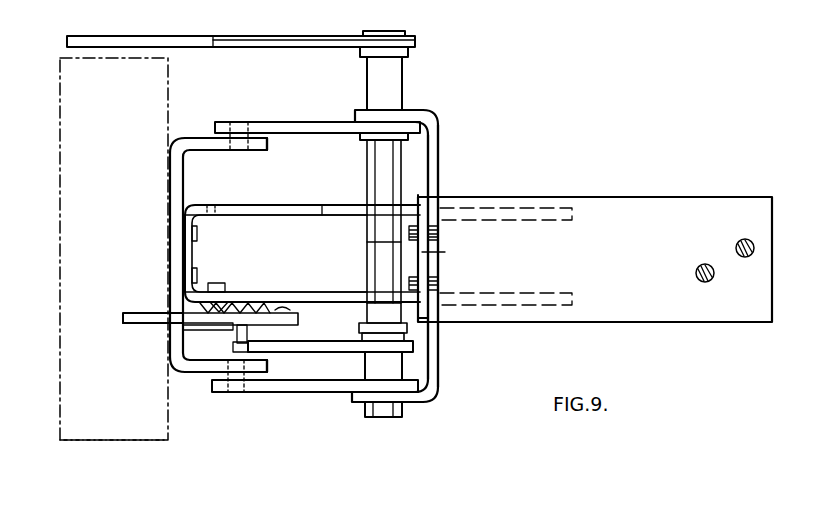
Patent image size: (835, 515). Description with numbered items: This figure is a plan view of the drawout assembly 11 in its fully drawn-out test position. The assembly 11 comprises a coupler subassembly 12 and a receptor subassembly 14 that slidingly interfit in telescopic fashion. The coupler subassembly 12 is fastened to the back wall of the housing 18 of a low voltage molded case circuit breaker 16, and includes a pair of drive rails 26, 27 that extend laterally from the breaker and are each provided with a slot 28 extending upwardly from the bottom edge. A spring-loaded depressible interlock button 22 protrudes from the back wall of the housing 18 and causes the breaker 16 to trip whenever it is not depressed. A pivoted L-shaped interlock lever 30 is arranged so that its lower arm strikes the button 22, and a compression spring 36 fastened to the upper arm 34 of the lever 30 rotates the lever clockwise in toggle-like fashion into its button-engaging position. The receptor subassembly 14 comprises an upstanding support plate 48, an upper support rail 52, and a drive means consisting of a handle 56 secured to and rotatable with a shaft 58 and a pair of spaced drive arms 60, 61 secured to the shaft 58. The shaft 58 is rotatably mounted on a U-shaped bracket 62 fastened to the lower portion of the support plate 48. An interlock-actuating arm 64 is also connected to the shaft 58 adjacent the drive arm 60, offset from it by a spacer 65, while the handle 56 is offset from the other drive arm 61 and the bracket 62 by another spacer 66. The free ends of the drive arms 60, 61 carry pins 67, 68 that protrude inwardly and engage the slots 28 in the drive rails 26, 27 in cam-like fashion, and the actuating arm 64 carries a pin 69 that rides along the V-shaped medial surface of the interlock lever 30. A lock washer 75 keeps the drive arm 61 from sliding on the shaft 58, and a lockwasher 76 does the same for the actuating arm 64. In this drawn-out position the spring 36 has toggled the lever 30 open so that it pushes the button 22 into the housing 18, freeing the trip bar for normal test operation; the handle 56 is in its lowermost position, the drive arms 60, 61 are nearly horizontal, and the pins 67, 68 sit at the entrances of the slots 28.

The drawout assembly 11 is at (470, 40).
The coupler subassembly 12 is at (160, 184).
The receptor subassembly 14 is at (443, 131).
The circuit breaker 16 is at (92, 238).
The housing 18 is at (119, 442).
The interlock button 22 is at (147, 312).
The drive rail 26 is at (210, 375).
The drive rail 27 is at (194, 140).
The slot 28 is at (222, 205).
The interlock lever 30 is at (184, 324).
The upper arm 34 is at (299, 320).
The compression spring 36 is at (262, 302).
The support plate 48 is at (445, 252).
The upper support rail 52 is at (636, 198).
The handle 56 is at (253, 36).
The shaft 58 is at (302, 253).
The drive arm 60 is at (288, 393).
The drive arm 61 is at (288, 122).
The U-shaped bracket 62 is at (434, 158).
The interlock-actuating arm 64 is at (292, 352).
The spacer 65 is at (385, 364).
The spacer 66 is at (395, 79).
The pin 67 is at (237, 392).
The pin 68 is at (240, 122).
The pin 69 is at (236, 337).
The lock washer 75 is at (362, 141).
The lockwasher 76 is at (408, 334).